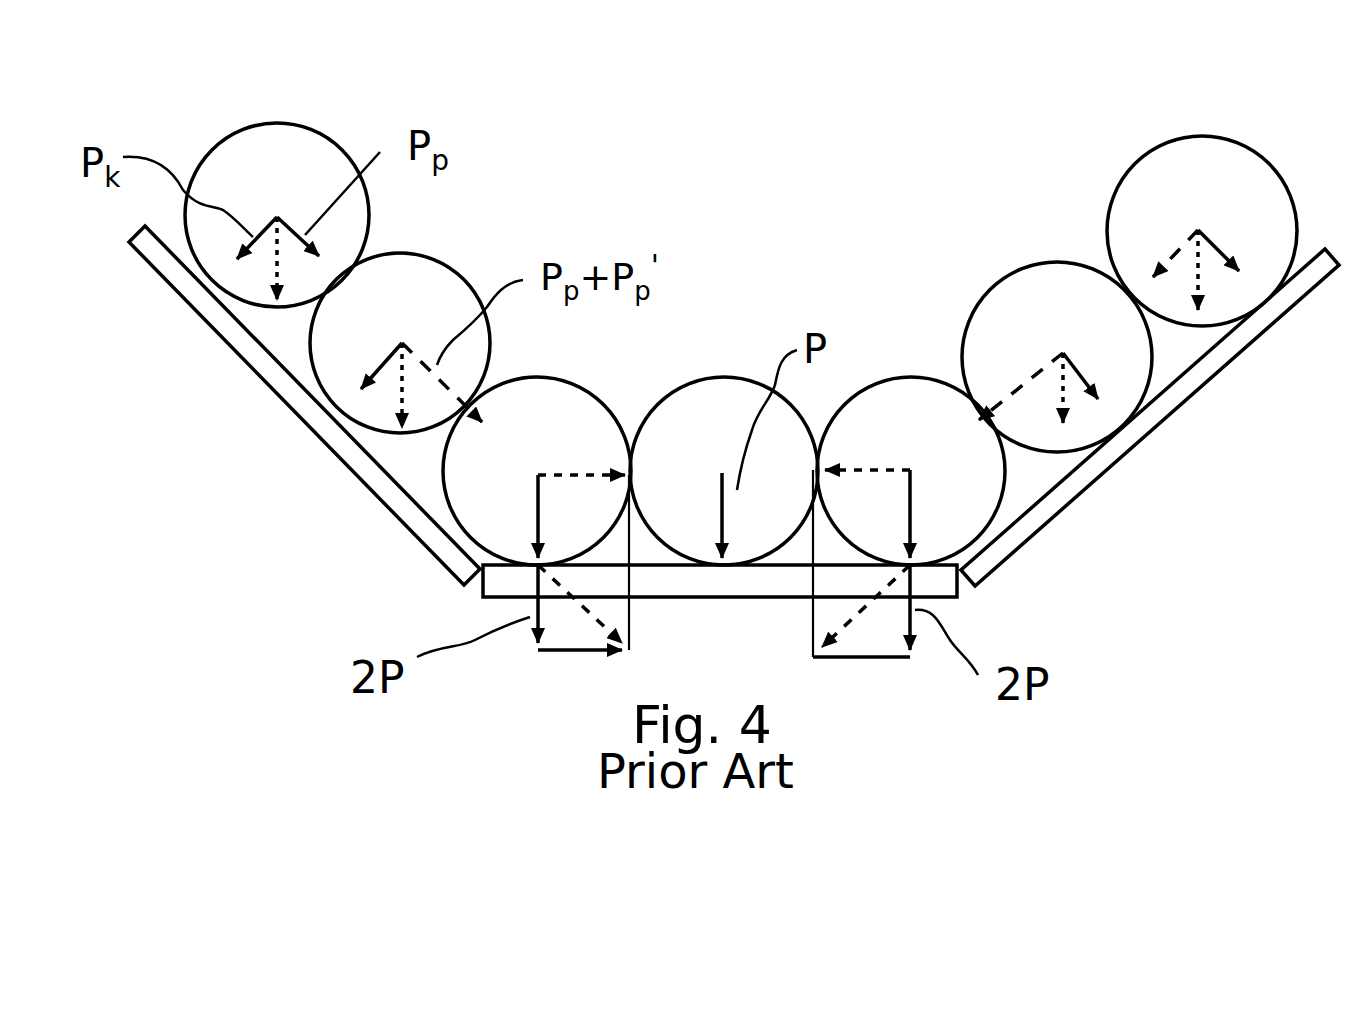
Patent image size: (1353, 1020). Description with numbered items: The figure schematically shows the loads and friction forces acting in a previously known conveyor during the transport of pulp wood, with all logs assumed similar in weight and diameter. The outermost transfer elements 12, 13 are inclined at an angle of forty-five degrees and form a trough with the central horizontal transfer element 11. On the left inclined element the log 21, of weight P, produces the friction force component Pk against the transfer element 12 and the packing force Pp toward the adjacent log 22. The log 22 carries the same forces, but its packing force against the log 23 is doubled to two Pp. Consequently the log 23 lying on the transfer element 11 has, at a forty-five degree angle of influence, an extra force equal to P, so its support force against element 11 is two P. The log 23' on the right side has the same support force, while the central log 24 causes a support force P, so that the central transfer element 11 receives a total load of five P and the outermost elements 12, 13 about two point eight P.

The transfer element 11 is at (713, 583).
The outermost transfer element 12 is at (322, 427).
The outermost transfer element 13 is at (1107, 457).
The log 21 is at (267, 153).
The log 22 is at (430, 293).
The log 23 is at (554, 470).
The log 24 is at (708, 400).
The log 23' is at (909, 455).